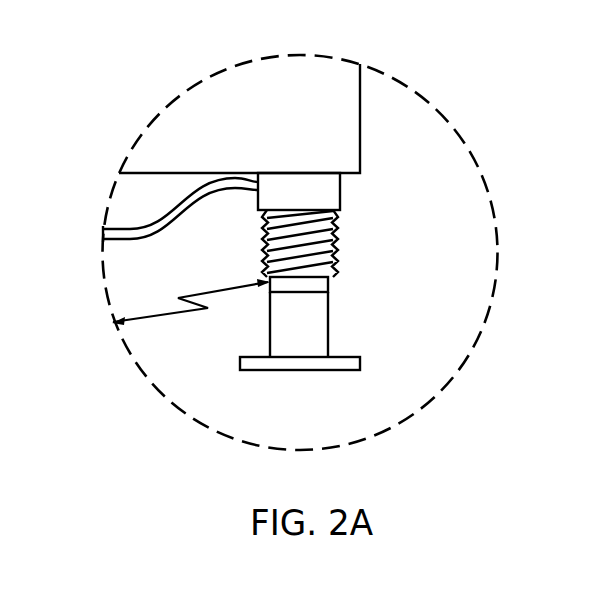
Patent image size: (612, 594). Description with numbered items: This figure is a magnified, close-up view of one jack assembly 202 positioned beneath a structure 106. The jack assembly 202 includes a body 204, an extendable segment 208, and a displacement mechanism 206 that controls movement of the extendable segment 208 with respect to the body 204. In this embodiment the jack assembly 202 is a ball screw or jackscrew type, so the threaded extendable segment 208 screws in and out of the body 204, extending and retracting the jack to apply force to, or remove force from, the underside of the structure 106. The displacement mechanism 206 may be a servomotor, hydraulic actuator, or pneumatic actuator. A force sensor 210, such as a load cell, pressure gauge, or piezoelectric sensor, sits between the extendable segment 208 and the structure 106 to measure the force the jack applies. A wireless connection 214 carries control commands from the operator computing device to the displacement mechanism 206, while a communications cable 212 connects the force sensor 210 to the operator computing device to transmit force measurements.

The structure 106 is at (360, 136).
The jack assembly 202 is at (396, 263).
The body 204 is at (276, 323).
The displacement mechanism 206 is at (328, 285).
The extendable segment 208 is at (334, 240).
The force sensor 210 is at (340, 195).
The communications cable 212 is at (167, 217).
The wireless connection 214 is at (168, 317).